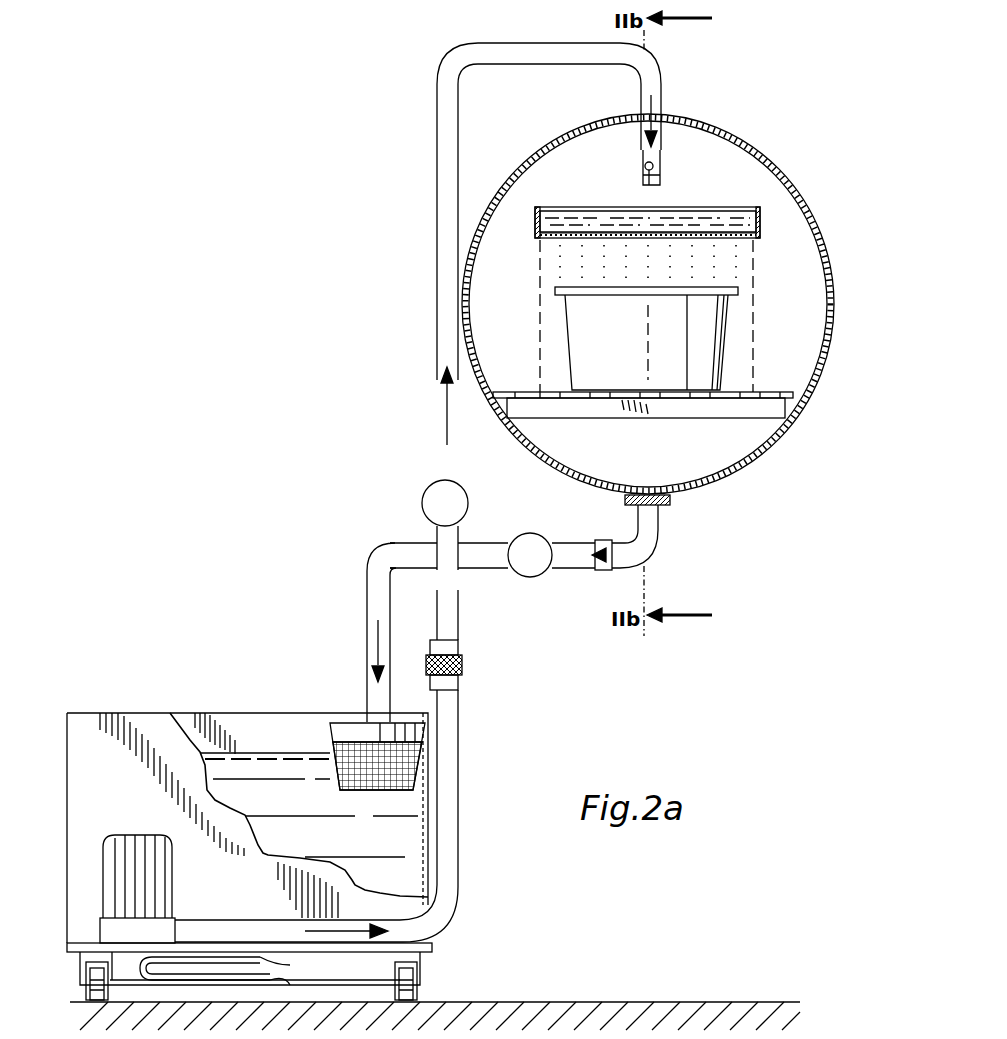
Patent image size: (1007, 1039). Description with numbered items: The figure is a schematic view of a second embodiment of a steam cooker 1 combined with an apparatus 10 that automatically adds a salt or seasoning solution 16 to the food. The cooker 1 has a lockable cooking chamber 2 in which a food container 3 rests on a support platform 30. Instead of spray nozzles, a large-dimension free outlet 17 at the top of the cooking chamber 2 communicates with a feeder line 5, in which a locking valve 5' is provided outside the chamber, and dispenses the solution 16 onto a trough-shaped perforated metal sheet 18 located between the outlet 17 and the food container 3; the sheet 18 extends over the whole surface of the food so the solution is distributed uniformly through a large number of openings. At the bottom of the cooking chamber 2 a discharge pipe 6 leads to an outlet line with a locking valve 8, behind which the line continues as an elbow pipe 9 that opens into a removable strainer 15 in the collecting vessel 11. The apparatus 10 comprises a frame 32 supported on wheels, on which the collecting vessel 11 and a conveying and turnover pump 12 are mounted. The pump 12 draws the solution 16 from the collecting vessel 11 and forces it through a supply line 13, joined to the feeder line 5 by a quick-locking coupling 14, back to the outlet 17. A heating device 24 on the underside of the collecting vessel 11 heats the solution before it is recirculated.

The cooker 1 is at (775, 450).
The cooking chamber 2 is at (787, 308).
The food container 3 is at (647, 347).
The feeder line 5 is at (549, 244).
The locking valve 5' is at (430, 497).
The discharge pipe 6 is at (657, 537).
The locking valve 8 is at (540, 572).
The elbow pipe 9 is at (382, 572).
The apparatus 10 is at (135, 697).
The collecting vessel 11 is at (100, 725).
The conveying and turnover pump 12 is at (172, 868).
The supply line 13 is at (458, 830).
The quick-locking coupling 14 is at (464, 666).
The removable strainer 15 is at (333, 776).
The salt or seasoning solution 16 is at (700, 211).
The free outlet 17 is at (660, 172).
The trough-shaped perforated metal sheet 18 is at (761, 238).
The heating device 24 is at (203, 965).
The support platform 30 is at (780, 392).
The frame 32 is at (70, 950).